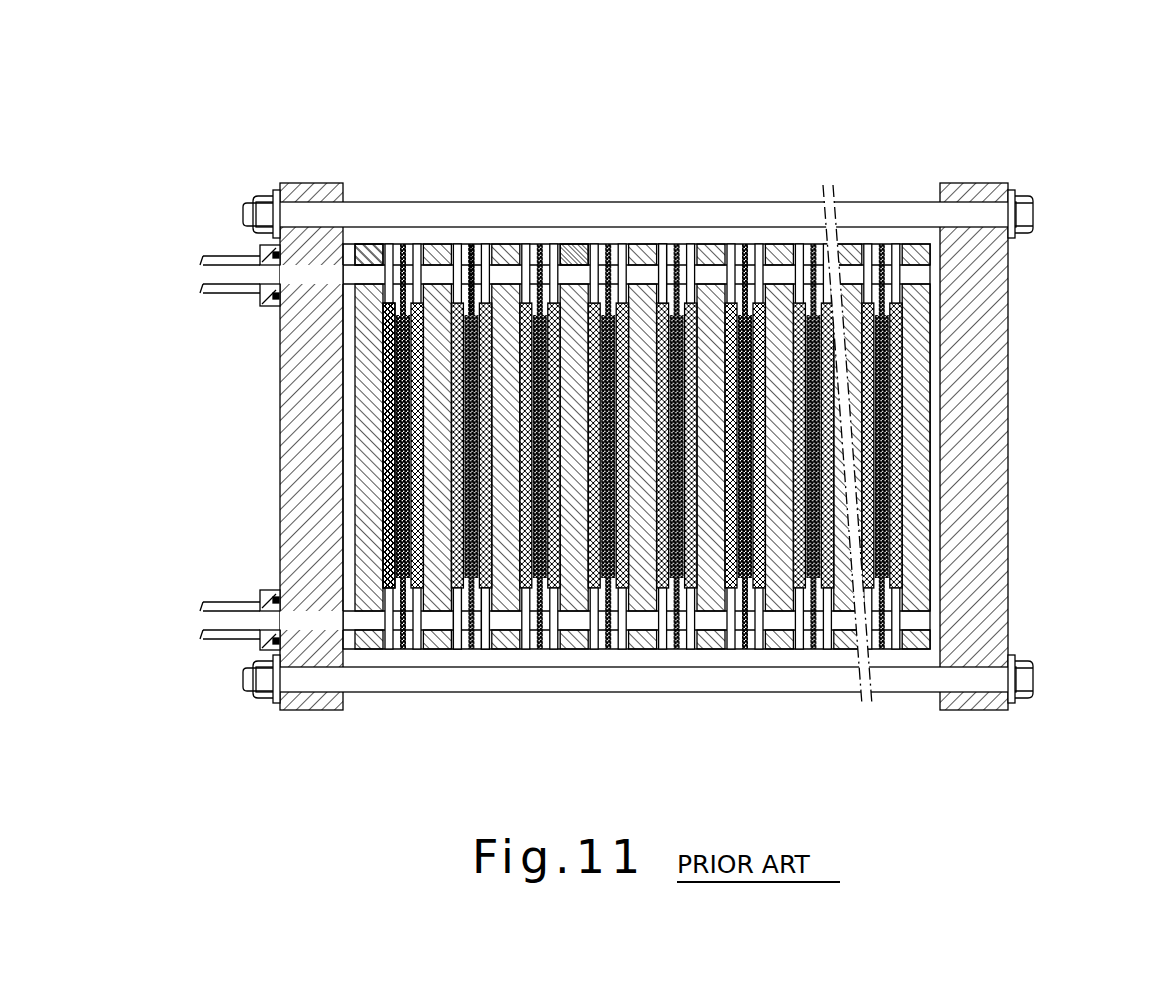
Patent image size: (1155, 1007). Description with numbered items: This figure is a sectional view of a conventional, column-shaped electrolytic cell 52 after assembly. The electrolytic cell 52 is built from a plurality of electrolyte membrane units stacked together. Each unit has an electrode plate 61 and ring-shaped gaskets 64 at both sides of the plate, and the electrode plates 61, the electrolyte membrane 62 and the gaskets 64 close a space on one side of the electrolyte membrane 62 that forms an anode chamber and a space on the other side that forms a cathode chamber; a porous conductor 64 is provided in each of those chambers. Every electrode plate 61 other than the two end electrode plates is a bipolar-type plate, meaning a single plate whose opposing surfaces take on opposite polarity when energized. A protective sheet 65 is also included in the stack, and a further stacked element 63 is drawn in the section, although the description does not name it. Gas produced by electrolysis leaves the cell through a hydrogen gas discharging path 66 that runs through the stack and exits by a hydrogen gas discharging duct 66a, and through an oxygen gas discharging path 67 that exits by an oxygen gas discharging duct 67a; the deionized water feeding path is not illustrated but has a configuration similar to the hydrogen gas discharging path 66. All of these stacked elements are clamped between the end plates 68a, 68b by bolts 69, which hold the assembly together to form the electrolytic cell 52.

The electrolytic cell 52 is at (685, 137).
The electrode plate 61 is at (373, 646).
The electrolyte membrane 62 is at (470, 244).
The seal frame 63 is at (568, 244).
The ring-shaped gasket 64 is at (349, 246).
The protective sheet 65 is at (478, 649).
The hydrogen gas discharging path 66 is at (385, 302).
The hydrogen gas discharging duct 66a is at (368, 274).
The oxygen gas discharging path 67 is at (423, 649).
The oxygen gas discharging duct 67a is at (378, 620).
The end plate 68a is at (300, 460).
The end plate 68b is at (990, 460).
The bolt 69 is at (802, 680).